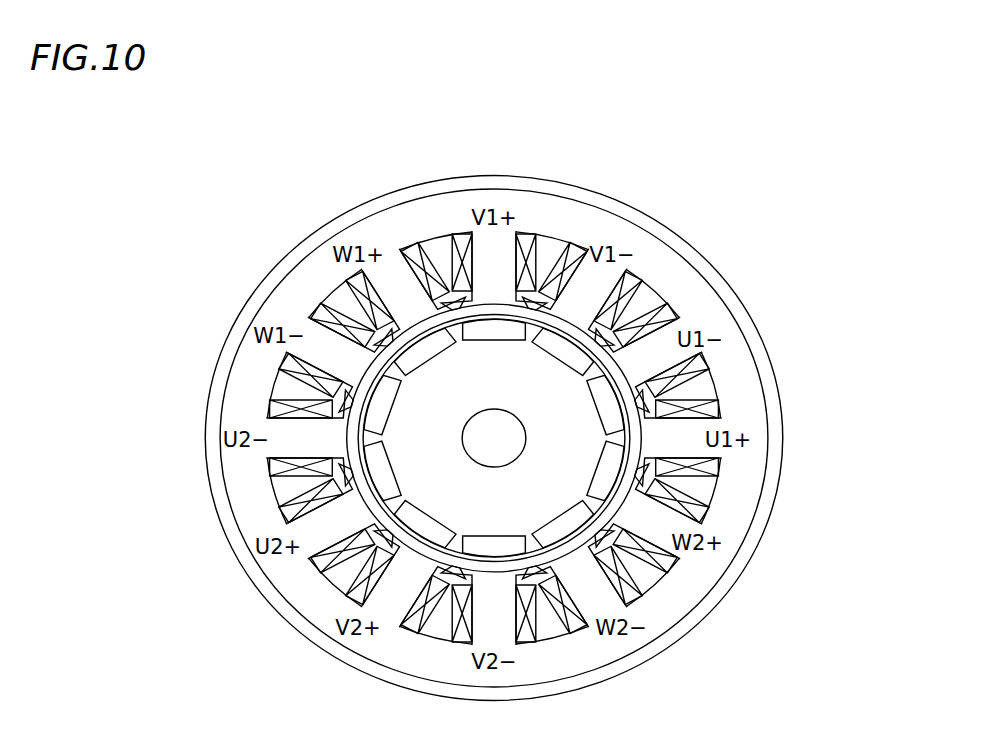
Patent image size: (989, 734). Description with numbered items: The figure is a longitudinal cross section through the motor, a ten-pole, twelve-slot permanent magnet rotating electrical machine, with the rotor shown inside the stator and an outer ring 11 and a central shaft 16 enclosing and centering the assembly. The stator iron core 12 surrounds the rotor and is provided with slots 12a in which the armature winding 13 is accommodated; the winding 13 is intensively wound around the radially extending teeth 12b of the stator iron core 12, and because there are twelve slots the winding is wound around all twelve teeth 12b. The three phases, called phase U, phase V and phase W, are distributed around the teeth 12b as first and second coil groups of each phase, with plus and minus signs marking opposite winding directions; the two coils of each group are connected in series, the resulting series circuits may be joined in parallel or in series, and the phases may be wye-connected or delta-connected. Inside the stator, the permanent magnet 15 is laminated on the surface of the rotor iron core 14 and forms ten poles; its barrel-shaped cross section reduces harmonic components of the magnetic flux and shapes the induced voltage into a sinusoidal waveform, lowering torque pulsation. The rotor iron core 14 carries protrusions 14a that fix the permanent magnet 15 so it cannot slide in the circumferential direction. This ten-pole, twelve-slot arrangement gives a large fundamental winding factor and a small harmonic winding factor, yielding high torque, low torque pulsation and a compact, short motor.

The housing 11 is at (760, 347).
The stator iron core 12 is at (680, 283).
The slots 12a is at (552, 244).
The teeth 12b is at (650, 530).
The armature winding 13 is at (325, 560).
The rotor iron core 14 is at (373, 383).
The protrusions 14a is at (390, 371).
The permanent magnet 15 is at (372, 406).
The shaft 16 is at (510, 451).